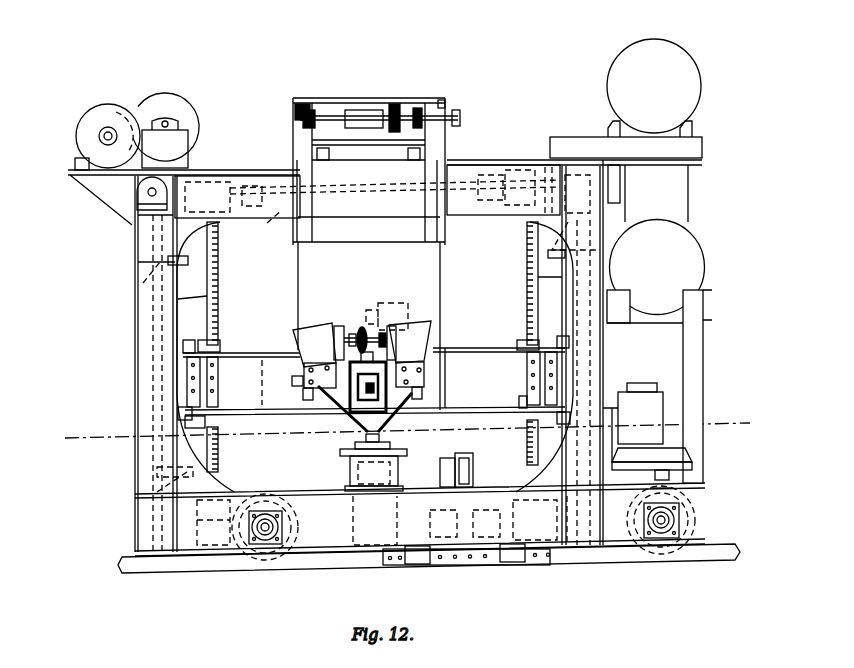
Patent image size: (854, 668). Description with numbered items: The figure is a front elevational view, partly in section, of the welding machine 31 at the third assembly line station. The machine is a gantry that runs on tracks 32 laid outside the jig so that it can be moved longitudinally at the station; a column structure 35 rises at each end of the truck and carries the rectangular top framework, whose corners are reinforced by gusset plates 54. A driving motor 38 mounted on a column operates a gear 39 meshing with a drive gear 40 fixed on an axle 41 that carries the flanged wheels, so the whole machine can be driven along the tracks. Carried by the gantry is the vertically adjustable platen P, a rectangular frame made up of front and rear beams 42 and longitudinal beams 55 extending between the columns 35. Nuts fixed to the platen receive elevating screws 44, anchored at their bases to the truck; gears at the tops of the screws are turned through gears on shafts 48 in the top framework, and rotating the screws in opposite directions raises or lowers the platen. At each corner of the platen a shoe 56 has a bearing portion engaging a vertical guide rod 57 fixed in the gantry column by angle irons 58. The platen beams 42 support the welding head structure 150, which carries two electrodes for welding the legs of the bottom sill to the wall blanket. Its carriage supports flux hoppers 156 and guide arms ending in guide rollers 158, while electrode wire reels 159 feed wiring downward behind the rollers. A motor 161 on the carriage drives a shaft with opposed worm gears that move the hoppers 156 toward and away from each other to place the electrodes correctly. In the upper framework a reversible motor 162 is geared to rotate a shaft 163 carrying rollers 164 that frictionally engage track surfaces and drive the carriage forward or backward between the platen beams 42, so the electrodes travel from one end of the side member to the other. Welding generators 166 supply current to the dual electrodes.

The welding machine 31 is at (132, 242).
The tracks 32 is at (642, 558).
The column structure 35 is at (136, 360).
The driving motor 38 is at (660, 413).
The gear 39 is at (697, 490).
The drive gear 40 is at (294, 525).
The axle 41 is at (268, 540).
The front and rear beams 42 is at (185, 410).
The elevating screw 44 is at (220, 272).
The shaft 48 is at (283, 220).
The gusset plate 54 is at (240, 172).
The longitudinal beam 55 is at (262, 368).
The shoe 56 is at (222, 348).
The guide rod 57 is at (218, 297).
The angle iron 58 is at (148, 268).
The welding head structure 150 is at (305, 172).
The flux hopper 156 is at (314, 338).
The guide roller 158 is at (352, 428).
The electrode wire reel 159 is at (338, 326).
The motor 161 is at (397, 301).
The reversible motor 162 is at (348, 103).
The shaft 163 is at (399, 112).
The roller 164 is at (312, 106).
The welding generator 166 is at (612, 88).
The platen P is at (272, 403).